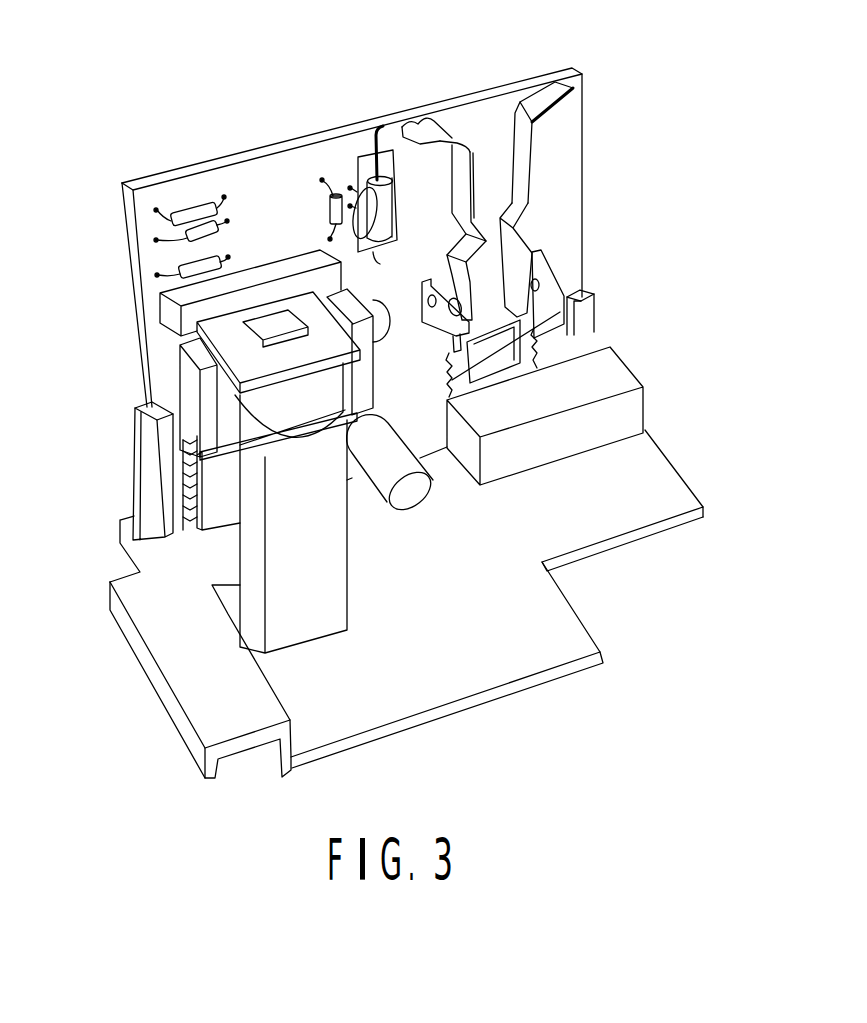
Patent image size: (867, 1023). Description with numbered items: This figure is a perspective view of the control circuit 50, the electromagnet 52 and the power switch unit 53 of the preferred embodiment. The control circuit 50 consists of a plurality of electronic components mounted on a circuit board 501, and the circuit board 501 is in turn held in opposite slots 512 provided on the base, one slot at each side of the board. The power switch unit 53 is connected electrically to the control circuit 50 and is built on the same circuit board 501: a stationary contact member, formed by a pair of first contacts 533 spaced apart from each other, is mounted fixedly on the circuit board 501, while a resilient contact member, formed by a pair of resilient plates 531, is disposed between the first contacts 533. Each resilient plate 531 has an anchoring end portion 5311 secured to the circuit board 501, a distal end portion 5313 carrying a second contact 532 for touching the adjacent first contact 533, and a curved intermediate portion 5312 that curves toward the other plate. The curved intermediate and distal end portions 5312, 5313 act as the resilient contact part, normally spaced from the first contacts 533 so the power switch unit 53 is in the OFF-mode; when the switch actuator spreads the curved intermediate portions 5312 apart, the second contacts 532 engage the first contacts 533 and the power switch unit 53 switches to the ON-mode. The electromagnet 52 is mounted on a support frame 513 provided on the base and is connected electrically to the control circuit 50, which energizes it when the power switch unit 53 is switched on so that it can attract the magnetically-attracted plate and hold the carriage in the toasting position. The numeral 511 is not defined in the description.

The control circuit 50 is at (124, 275).
The circuit board 501 is at (310, 150).
The base plate 511 is at (636, 464).
The slots 512 is at (160, 441).
The support frame 513 is at (275, 510).
The electromagnet 52 is at (243, 342).
The power switch unit 53 is at (547, 131).
The resilient plates 531 is at (475, 168).
The anchoring end portion 5311 is at (557, 98).
The curved intermediate portion 5312 is at (512, 214).
The distal end portion 5313 is at (428, 136).
The second contact 532 is at (462, 300).
The first contacts 533 is at (547, 285).